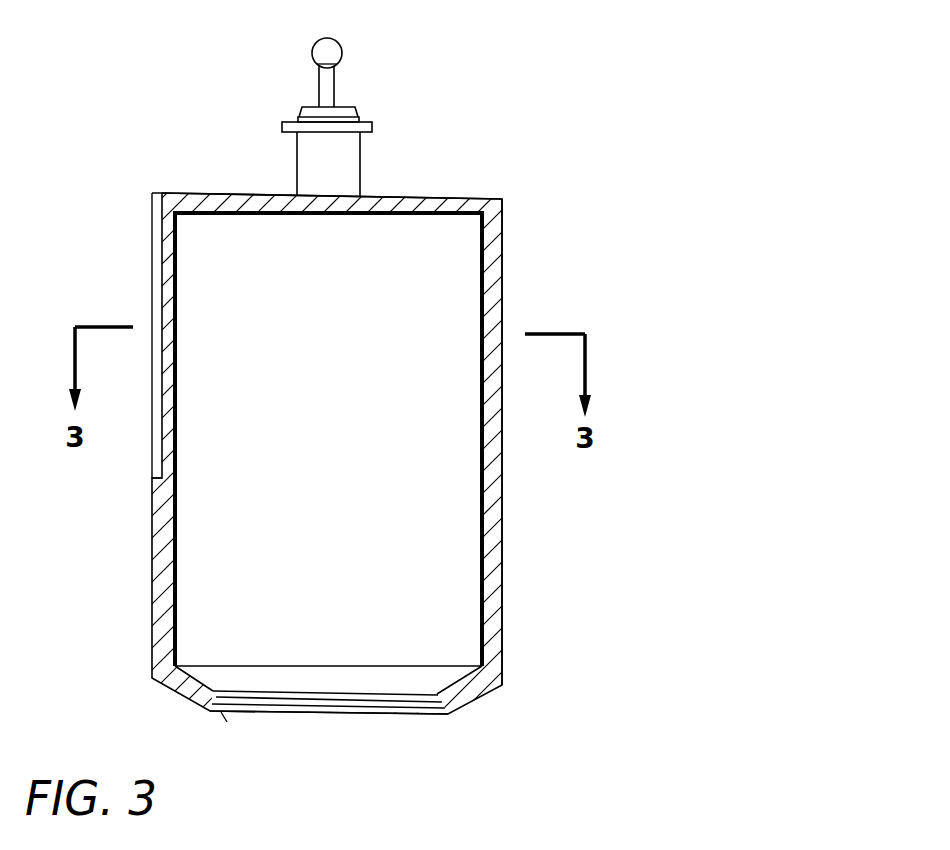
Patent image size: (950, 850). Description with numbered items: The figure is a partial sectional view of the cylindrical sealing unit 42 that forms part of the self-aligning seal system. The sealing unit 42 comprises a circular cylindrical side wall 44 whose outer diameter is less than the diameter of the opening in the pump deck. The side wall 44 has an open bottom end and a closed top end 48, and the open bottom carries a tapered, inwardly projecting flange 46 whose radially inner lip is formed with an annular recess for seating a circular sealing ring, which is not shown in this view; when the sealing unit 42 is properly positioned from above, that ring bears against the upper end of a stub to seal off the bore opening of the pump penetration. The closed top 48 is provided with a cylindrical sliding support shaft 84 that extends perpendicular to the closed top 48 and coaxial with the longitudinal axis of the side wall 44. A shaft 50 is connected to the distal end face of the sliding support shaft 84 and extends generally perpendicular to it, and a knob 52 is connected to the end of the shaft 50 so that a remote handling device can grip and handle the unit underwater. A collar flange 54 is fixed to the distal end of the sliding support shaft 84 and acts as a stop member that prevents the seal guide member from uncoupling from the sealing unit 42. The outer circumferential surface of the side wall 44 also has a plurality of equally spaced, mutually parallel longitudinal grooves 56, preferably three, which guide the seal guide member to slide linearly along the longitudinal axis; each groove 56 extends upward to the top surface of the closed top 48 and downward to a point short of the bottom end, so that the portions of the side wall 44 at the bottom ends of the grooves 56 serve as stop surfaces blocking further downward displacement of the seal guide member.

The sealing unit 42 is at (510, 232).
The side wall 44 is at (502, 583).
The flange 46 is at (473, 700).
The closed top end 48 is at (437, 196).
The shaft 50 is at (318, 88).
The knob 52 is at (313, 50).
The collar flange 54 is at (282, 128).
The longitudinal grooves 56 is at (151, 237).
The sliding support shaft 84 is at (310, 167).